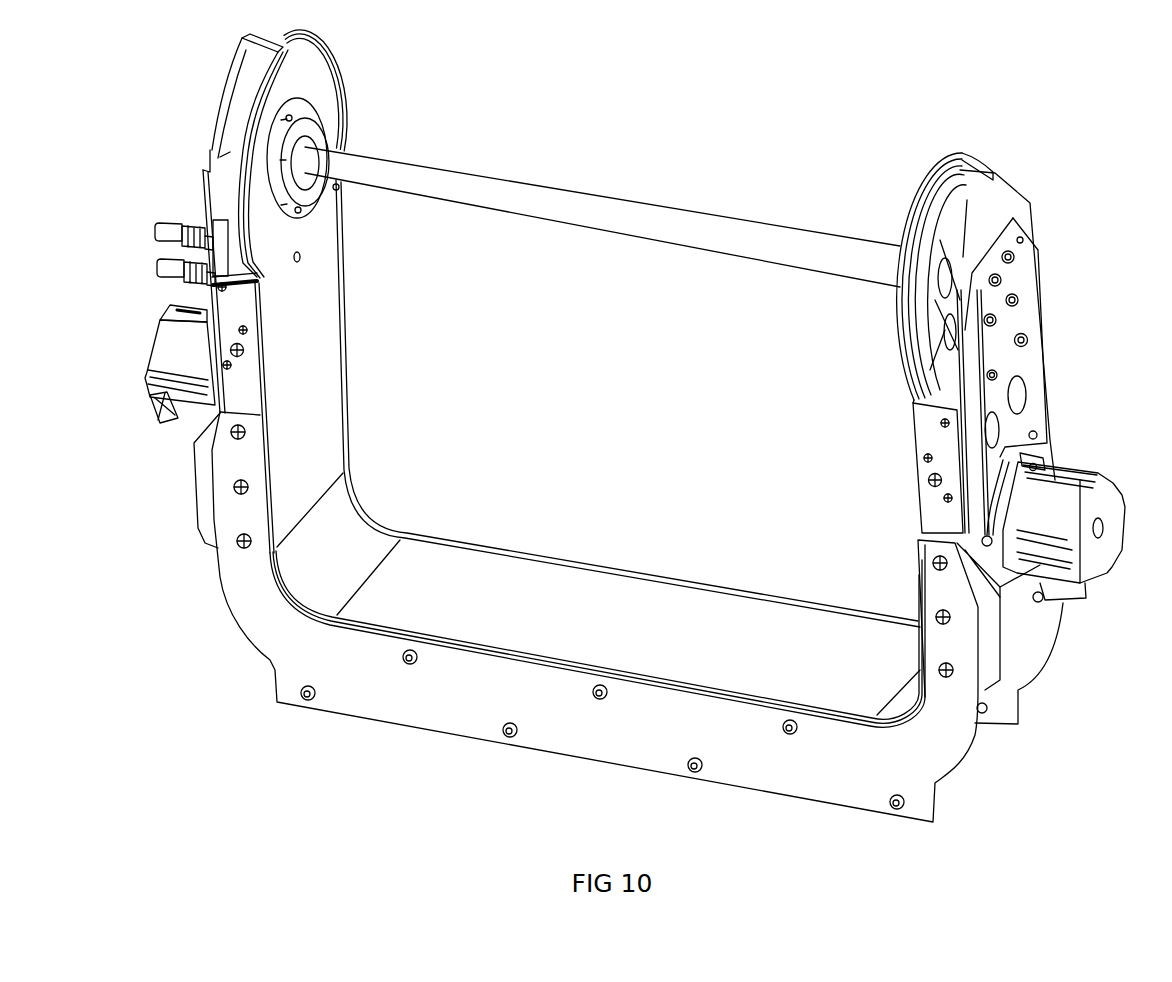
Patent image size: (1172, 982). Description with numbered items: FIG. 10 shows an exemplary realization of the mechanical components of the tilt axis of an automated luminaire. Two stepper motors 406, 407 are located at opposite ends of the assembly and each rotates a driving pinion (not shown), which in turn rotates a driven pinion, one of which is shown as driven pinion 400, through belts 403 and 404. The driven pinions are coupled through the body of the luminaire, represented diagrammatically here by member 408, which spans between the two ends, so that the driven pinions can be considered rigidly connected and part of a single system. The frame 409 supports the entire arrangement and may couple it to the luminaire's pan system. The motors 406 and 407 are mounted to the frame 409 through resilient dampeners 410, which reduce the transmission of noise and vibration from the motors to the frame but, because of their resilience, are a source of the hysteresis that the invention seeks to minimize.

The driven pinion 400 is at (926, 324).
The belt 403 is at (916, 290).
The belt 404 is at (240, 117).
The stepper motor 406 is at (1088, 547).
The stepper motor 407 is at (193, 390).
The member 408 is at (543, 210).
The frame 409 is at (300, 648).
The resilient dampener 410 is at (1032, 460).